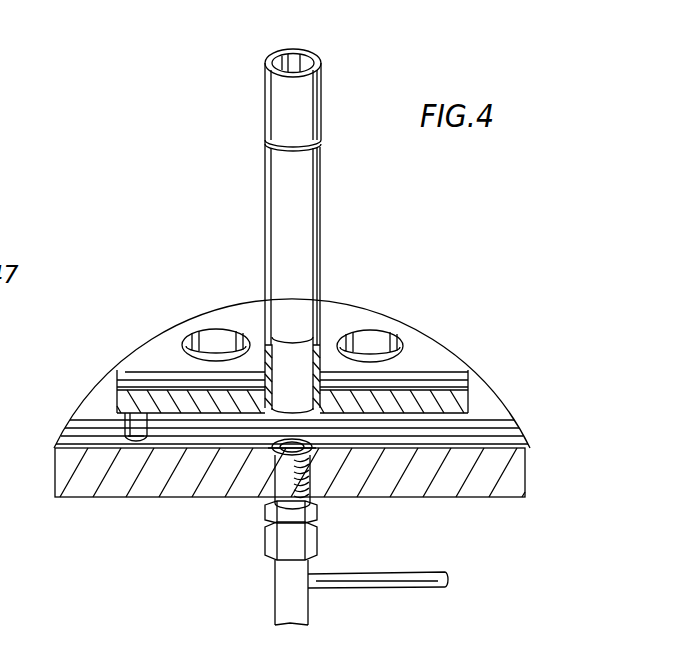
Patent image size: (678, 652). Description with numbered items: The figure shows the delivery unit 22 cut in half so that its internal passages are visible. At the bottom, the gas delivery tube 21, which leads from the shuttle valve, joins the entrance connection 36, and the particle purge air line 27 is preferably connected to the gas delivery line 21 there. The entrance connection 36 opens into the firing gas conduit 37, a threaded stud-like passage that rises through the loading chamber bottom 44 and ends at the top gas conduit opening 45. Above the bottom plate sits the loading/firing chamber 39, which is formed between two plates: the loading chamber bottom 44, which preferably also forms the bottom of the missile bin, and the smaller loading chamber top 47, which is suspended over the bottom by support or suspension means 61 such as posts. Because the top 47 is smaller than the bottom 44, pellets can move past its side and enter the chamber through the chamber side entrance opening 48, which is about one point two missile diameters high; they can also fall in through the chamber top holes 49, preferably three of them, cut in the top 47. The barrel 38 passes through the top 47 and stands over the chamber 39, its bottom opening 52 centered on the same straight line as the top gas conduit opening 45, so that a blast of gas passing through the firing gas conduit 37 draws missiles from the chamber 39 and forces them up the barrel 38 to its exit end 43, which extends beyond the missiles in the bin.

The delivery unit 22 is at (487, 222).
The exit end 43 is at (302, 50).
The barrel 38 is at (322, 192).
The chamber top holes 49 is at (211, 336).
The loading chamber top 47 is at (447, 343).
The loading chamber bottom 44 is at (523, 432).
The chamber side entrance opening 48 is at (127, 422).
The bottom opening 52 is at (297, 408).
The support or suspension means 61 is at (135, 432).
The loading/firing chamber 39 is at (210, 427).
The top gas conduit opening 45 is at (270, 427).
The firing gas conduit 37 is at (307, 478).
The entrance connection 36 is at (313, 558).
The gas delivery tube 21 is at (268, 603).
The particle purge air line 27 is at (420, 590).